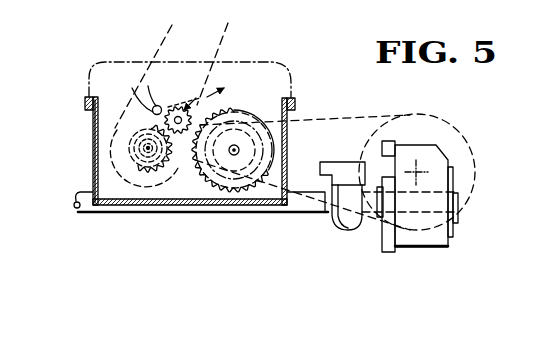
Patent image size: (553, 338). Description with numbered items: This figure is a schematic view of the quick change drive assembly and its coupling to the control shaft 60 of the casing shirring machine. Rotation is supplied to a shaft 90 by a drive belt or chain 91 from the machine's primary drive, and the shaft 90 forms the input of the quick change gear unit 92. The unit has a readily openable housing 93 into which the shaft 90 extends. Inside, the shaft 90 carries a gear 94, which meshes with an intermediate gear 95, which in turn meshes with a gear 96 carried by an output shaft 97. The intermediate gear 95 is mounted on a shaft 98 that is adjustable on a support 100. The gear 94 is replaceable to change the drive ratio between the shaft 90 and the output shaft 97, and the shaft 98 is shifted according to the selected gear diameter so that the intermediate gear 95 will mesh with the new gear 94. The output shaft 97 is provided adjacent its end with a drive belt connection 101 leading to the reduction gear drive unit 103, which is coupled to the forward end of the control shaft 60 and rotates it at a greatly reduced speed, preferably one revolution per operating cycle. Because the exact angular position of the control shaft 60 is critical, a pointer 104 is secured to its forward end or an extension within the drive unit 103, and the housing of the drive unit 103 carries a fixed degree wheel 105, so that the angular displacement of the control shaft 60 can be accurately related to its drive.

The control shaft 60 is at (88, 213).
The shaft 90 is at (148, 152).
The drive belt or chain 91 is at (171, 27).
The quick change gear unit 92 is at (297, 100).
The housing 93 is at (93, 134).
The gear 94 is at (140, 124).
The intermediate gear 95 is at (140, 112).
The gear 96 is at (225, 187).
The output shaft 97 is at (236, 152).
The shaft 98 is at (174, 107).
The support 100 is at (155, 106).
The drive belt connection 101 is at (362, 117).
The reduction gear drive unit 103 is at (424, 145).
The pointer 104 is at (453, 215).
The fixed degree wheel 105 is at (452, 162).